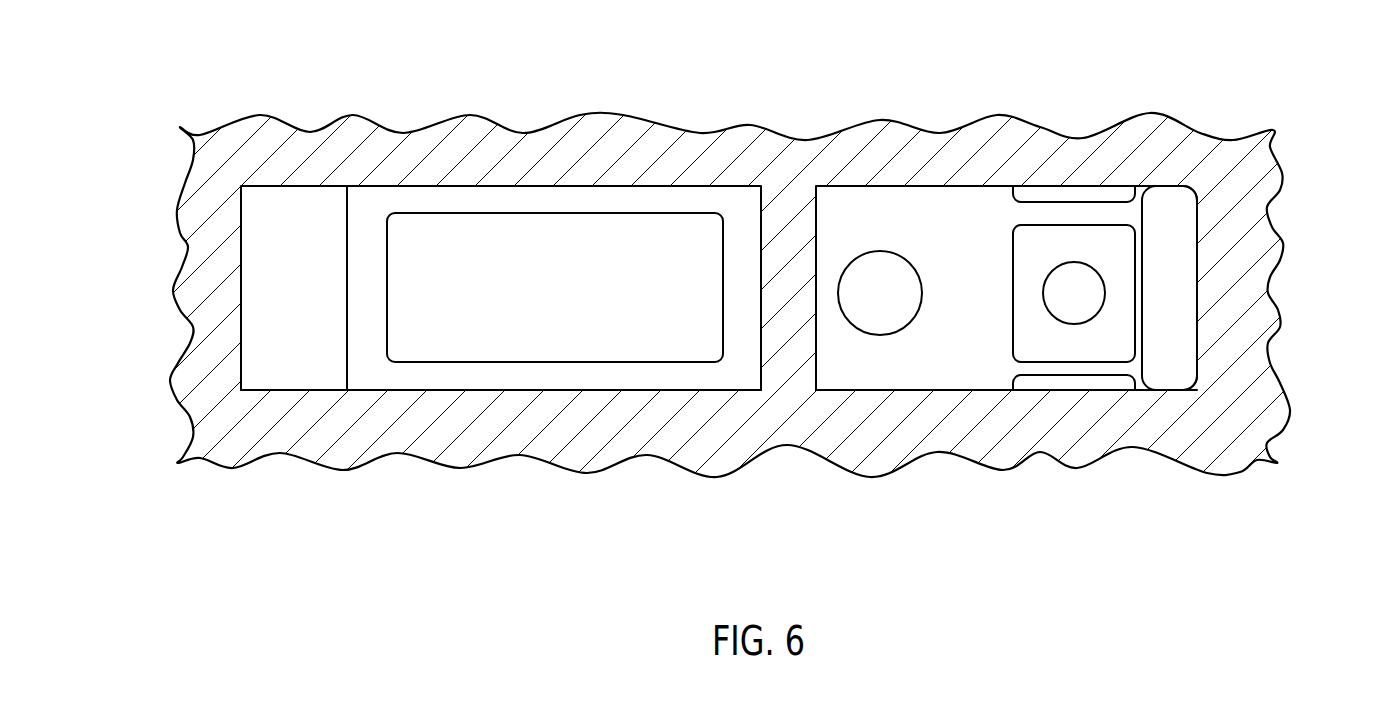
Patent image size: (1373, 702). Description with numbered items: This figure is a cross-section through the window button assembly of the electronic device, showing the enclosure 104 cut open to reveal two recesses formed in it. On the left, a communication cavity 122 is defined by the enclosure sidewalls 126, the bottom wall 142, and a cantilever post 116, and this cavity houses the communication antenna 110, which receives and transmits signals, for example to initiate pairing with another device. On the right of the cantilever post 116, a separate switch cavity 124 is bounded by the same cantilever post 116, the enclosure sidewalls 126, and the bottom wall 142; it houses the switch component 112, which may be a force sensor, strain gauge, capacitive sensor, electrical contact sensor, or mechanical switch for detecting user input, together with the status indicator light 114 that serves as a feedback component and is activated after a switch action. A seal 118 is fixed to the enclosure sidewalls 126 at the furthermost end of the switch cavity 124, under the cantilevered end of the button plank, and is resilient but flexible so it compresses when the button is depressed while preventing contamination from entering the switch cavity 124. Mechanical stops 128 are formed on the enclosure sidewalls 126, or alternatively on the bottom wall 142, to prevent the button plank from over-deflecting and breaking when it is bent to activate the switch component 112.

The enclosure 104 is at (197, 372).
The communication antenna 110 is at (527, 327).
The switch component 112 is at (1075, 303).
The status indicator light 114 is at (878, 298).
The cantilever post 116 is at (787, 248).
The seal 118 is at (1177, 235).
The communication cavity 122 is at (742, 224).
The switch cavity 124 is at (910, 221).
The enclosure sidewalls 126 is at (543, 187).
The mechanical stops 128 is at (1090, 193).
The bottom wall 142 is at (737, 362).